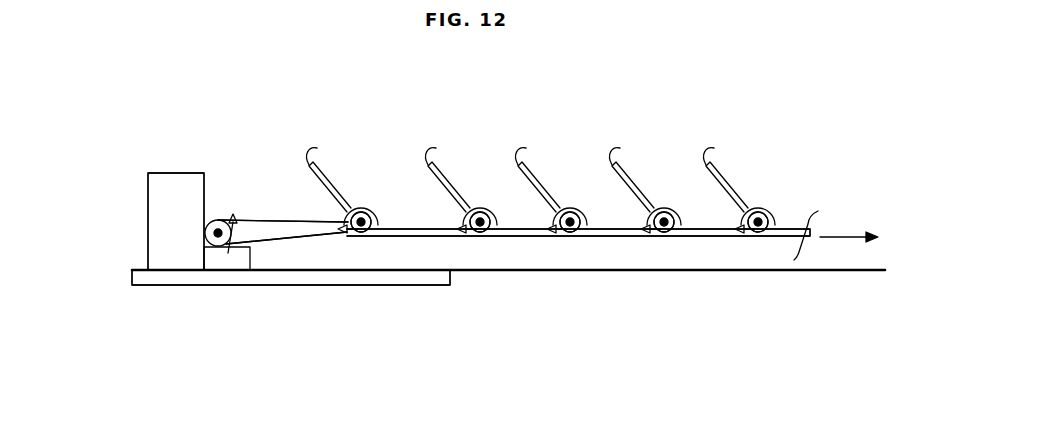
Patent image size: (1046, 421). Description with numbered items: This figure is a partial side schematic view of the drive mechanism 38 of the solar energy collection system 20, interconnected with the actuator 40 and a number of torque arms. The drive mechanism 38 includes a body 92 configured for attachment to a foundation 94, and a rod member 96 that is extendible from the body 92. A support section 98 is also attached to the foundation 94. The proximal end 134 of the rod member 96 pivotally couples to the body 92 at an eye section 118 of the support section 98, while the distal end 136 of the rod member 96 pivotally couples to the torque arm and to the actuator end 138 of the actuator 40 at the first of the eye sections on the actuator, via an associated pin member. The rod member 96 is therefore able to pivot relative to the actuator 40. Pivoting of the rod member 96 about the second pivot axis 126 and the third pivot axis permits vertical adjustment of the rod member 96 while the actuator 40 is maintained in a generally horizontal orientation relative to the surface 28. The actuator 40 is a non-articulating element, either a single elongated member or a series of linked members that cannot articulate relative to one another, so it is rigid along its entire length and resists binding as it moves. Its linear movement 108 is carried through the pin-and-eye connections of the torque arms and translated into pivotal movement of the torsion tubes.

The solar energy collection system 20 is at (402, 412).
The surface 28 is at (121, 270).
The drive mechanism 38 is at (158, 262).
The actuator 40 is at (800, 233).
The body 92 is at (155, 172).
The foundation 94 is at (178, 280).
The rod member 96 is at (281, 222).
The support section 98 is at (243, 262).
The linear movement 108 is at (840, 233).
The eye section 118 is at (224, 221).
The second pivot axis 126 is at (228, 253).
The proximal end 134 is at (234, 243).
The distal end 136 is at (312, 232).
The actuator end 138 is at (400, 228).